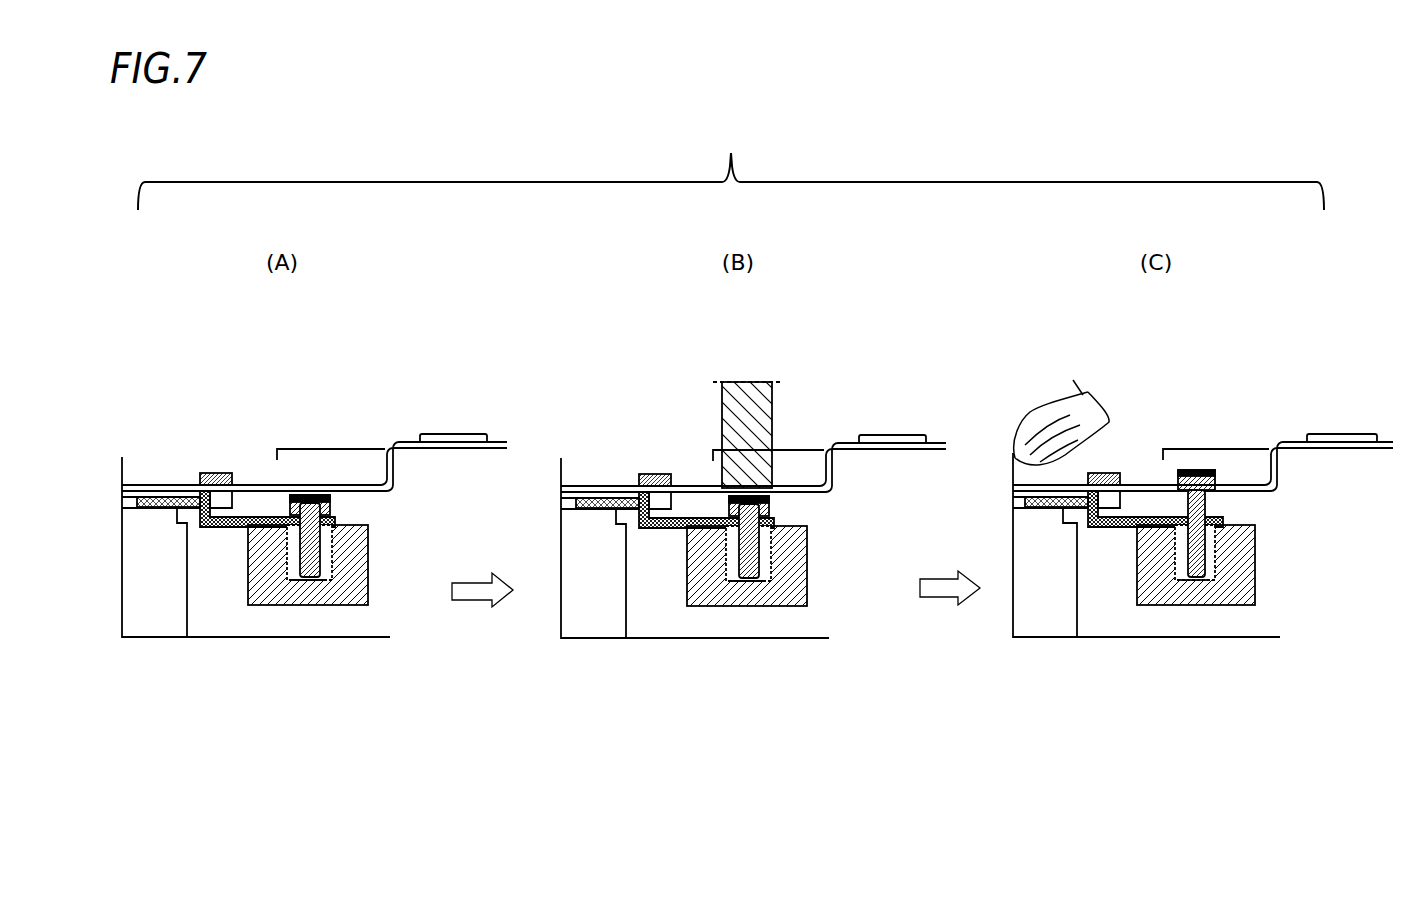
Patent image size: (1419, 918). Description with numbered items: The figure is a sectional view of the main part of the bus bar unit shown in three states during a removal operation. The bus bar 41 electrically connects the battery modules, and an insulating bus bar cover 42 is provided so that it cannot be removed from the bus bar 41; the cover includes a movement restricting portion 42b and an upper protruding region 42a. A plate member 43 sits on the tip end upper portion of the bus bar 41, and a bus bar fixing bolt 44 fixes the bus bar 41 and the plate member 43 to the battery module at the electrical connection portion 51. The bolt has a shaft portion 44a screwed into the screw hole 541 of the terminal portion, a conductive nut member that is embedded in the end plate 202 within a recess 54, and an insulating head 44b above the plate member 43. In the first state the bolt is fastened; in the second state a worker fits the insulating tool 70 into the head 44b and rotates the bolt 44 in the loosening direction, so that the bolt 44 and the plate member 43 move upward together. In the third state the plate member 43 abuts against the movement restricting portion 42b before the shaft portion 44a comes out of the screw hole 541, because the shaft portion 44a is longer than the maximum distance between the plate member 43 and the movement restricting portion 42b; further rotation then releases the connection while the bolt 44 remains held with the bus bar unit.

The bus bar 41 is at (238, 523).
The bus bar cover 42 is at (345, 484).
The protrusion of cover plate 42a is at (455, 436).
The movement restricting portion 42b is at (213, 473).
The plate member 43 is at (245, 517).
The bus bar fixing bolt 44 is at (806, 475).
The shaft portion 44a is at (770, 553).
The head 44b is at (775, 500).
The electrical connection portion 51 is at (370, 552).
The recess 54 is at (314, 592).
The screw hole 541 is at (312, 580).
The insulating tool 70 is at (718, 398).
The end plate 202 is at (368, 604).